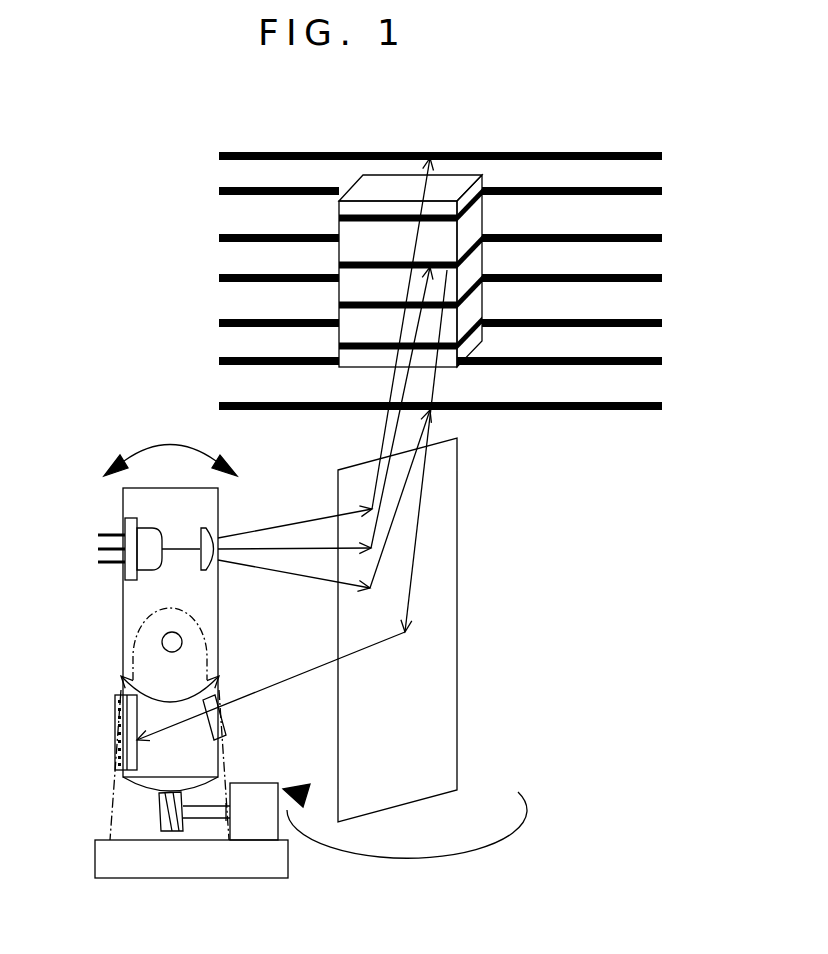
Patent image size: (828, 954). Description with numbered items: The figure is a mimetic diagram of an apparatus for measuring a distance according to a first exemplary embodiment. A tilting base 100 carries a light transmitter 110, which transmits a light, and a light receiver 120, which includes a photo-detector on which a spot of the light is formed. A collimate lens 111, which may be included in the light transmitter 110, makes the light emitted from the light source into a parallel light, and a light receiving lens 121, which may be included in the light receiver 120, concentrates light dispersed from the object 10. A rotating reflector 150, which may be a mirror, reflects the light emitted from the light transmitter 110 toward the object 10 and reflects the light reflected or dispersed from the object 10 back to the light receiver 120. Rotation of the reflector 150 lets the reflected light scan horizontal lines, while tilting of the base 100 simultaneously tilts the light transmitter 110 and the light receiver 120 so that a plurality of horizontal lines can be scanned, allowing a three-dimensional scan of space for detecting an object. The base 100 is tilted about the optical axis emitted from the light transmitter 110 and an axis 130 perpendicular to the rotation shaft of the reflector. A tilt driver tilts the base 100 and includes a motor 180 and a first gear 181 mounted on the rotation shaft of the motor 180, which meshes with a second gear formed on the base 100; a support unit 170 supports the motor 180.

The object 10 is at (458, 183).
The tilting base 100 is at (130, 502).
The light transmitter 110 is at (128, 570).
The collimate lens 111 is at (212, 528).
The light receiver 120 is at (118, 728).
The light receiving lens 121 is at (222, 723).
The axis 130 is at (162, 640).
The rotating reflector 150 is at (462, 562).
The support unit 170 is at (283, 870).
The motor 180 is at (248, 837).
The first gear 181 is at (170, 822).